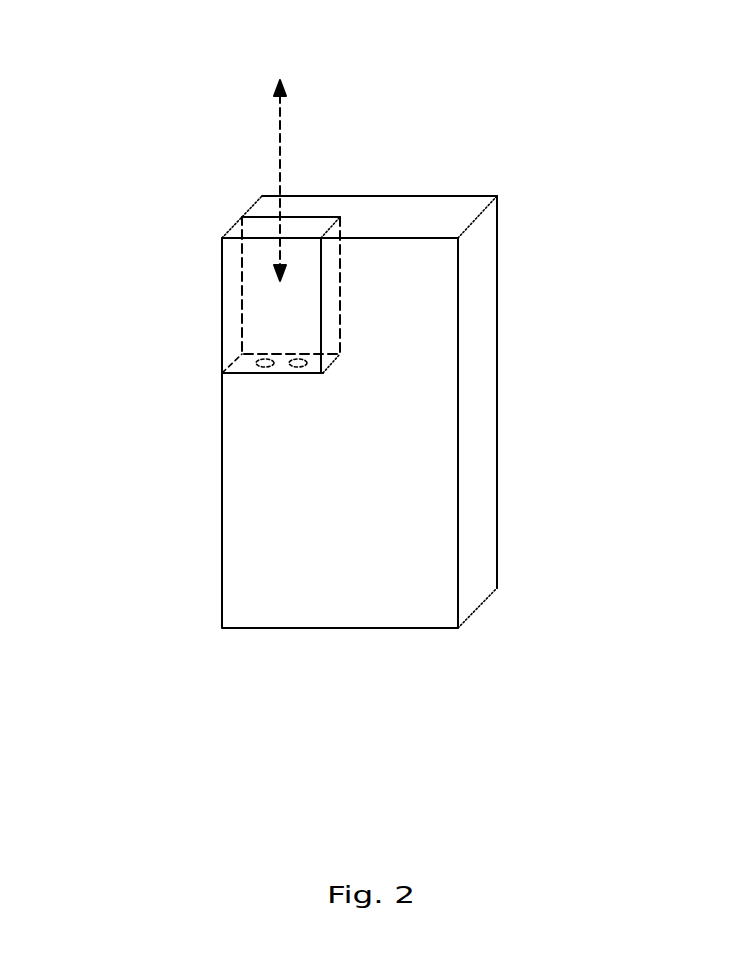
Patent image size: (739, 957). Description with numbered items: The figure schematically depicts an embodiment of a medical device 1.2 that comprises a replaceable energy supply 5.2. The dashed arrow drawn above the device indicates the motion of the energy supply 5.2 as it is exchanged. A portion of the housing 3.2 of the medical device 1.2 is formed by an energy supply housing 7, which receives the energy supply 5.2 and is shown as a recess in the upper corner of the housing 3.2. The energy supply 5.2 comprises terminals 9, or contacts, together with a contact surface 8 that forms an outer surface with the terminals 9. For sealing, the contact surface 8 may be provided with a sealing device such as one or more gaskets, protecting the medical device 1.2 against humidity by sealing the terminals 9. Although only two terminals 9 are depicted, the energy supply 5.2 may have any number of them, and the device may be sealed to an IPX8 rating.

The medical device 1.2 is at (347, 379).
The housing 3.2 is at (398, 627).
The energy supply 5.2 is at (273, 312).
The energy supply housing 7 is at (225, 270).
The contact surface 8 is at (318, 365).
The terminals 9 is at (260, 370).